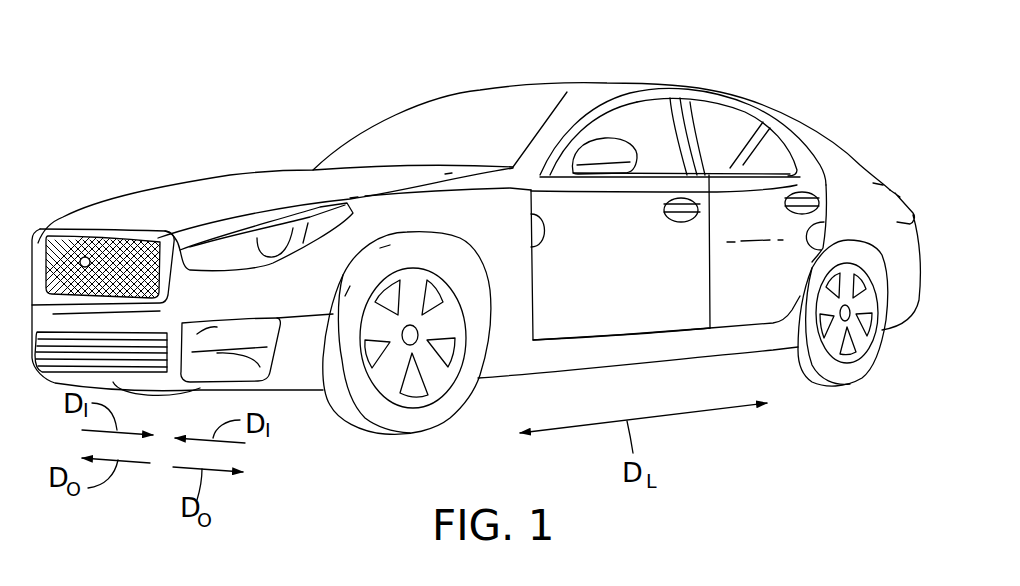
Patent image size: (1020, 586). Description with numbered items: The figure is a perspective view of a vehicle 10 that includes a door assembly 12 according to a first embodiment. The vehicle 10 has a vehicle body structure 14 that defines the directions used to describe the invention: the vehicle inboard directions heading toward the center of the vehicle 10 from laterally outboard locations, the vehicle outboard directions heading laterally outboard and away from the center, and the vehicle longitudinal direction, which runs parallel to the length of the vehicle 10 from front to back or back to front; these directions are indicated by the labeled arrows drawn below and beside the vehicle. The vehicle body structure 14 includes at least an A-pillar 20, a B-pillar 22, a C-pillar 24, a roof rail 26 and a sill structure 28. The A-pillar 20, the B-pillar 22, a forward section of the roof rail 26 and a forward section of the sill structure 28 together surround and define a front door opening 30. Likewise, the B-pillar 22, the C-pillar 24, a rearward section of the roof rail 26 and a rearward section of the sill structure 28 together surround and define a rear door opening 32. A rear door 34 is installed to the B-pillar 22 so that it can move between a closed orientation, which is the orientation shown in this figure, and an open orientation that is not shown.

The vehicle 10 is at (822, 50).
The door assembly 12 is at (645, 288).
The vehicle body structure 14 is at (617, 77).
The A-pillar 20 is at (569, 122).
The B-pillar 22 is at (692, 118).
The C-pillar 24 is at (803, 128).
The roof rail 26 is at (653, 96).
The sill structure 28 is at (688, 340).
The front door opening 30 is at (536, 214).
The rear door opening 32 is at (826, 221).
The rear door 34 is at (748, 297).